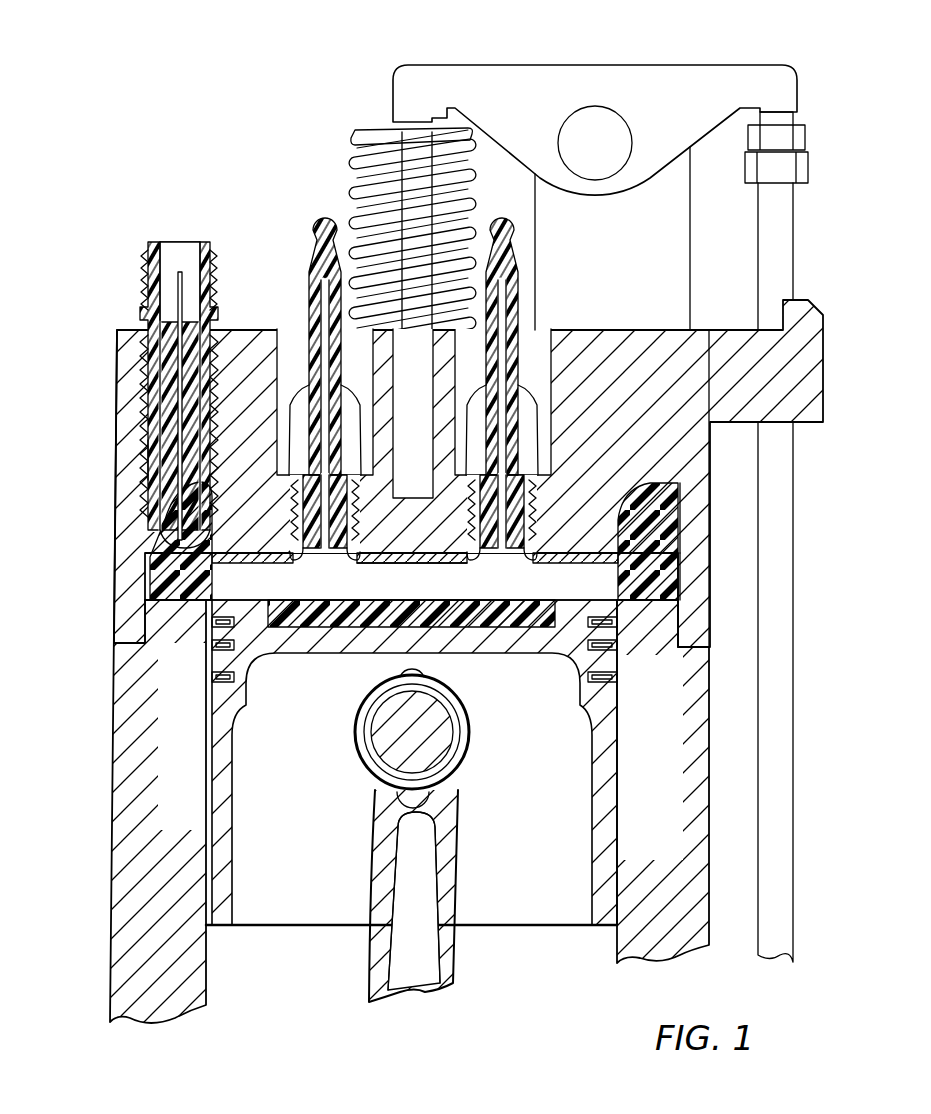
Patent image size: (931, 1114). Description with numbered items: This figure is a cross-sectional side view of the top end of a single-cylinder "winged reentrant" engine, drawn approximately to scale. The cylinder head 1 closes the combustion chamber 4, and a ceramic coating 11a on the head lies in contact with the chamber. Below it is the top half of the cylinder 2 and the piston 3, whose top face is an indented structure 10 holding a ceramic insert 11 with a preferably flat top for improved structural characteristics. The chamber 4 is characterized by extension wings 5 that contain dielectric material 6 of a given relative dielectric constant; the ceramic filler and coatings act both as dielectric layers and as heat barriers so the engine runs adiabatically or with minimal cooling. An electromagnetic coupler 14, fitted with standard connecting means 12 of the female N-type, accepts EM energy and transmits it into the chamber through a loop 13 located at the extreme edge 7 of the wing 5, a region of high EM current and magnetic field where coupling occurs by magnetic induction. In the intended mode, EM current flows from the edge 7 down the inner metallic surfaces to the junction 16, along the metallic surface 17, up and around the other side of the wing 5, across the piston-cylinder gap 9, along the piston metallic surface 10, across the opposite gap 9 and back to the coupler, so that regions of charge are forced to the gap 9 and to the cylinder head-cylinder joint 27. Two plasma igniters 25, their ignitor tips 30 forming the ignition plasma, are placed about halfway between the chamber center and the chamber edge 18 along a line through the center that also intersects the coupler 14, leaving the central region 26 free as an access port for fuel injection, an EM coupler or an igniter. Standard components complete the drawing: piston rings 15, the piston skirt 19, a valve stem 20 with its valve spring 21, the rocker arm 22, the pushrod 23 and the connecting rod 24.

The cylinder head 1 is at (678, 372).
The cylinder 2 is at (640, 745).
The piston 3 is at (492, 648).
The combustion chamber 4 is at (302, 588).
The extension wings 5 is at (690, 530).
The dielectric material 6 is at (680, 572).
The extreme edge of the wing 7 is at (640, 485).
The piston-cylinder gap 9 is at (208, 622).
The indented structure 10 is at (340, 630).
The ceramic insert 11 is at (355, 598).
The ceramic coating 11a is at (428, 563).
The connecting means 12 is at (145, 265).
The loop 13 is at (150, 552).
The electromagnetic coupler 14 is at (140, 458).
The piston rings 15 is at (214, 678).
The junction 16 is at (228, 548).
The metallic surface 17 is at (385, 553).
The chamber edge 18 is at (222, 582).
The piston skirt 19 is at (205, 832).
The valve stem 20 is at (455, 198).
The valve spring 21 is at (350, 164).
The rocker arm 22 is at (697, 76).
The pushrod 23 is at (788, 224).
The connecting rod 24 is at (450, 910).
The plasma igniters 25 is at (540, 498).
The central region 26 is at (413, 413).
The cylinder head-cylinder joint 27 is at (125, 612).
The ignitor tips 30 is at (518, 563).